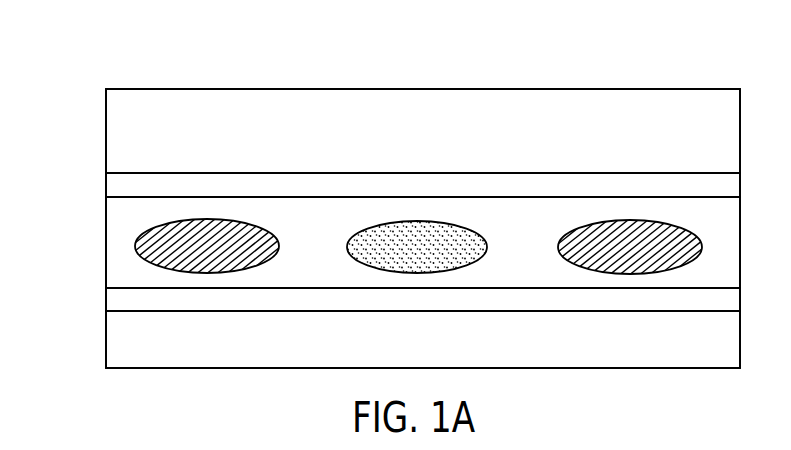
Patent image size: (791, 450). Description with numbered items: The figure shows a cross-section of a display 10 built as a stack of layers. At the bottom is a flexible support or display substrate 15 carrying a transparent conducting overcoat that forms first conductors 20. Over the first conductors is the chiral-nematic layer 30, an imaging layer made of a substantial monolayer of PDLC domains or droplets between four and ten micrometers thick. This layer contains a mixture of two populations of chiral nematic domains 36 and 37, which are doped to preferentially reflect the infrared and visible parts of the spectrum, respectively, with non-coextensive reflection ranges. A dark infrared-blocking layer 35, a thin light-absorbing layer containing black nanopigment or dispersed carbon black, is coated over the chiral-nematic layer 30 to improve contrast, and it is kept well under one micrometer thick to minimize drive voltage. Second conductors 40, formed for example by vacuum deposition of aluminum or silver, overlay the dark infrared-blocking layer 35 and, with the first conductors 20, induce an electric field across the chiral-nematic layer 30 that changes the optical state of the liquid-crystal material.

The display 10 is at (107, 66).
The display substrate 15 is at (106, 342).
The first conductors 20 is at (106, 302).
The chiral-nematic layer 30 is at (106, 236).
The dark infrared-blocking layer 35 is at (106, 183).
The chiral nematic domains 36 is at (142, 258).
The chiral nematic domains 37 is at (460, 226).
The second conductors 40 is at (106, 127).